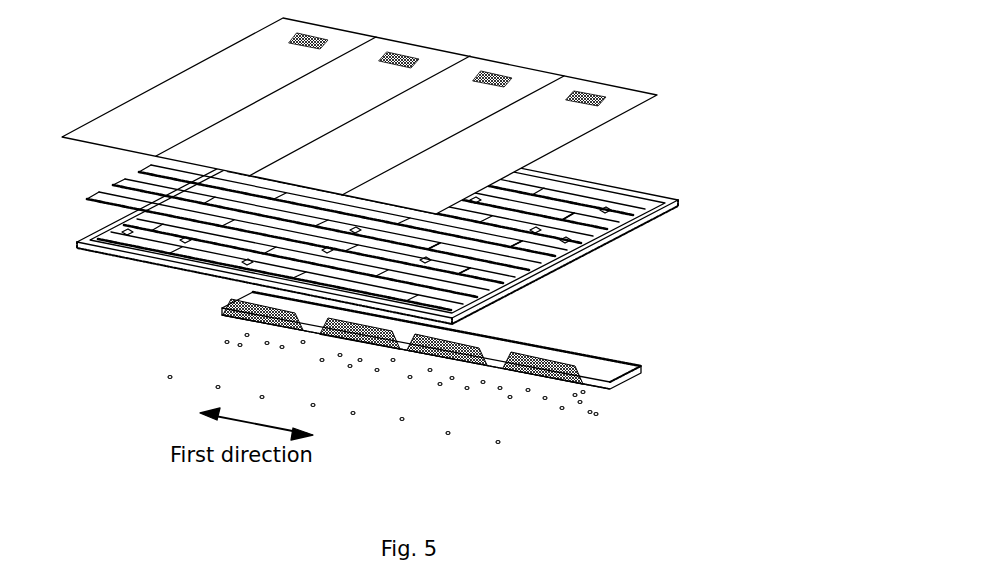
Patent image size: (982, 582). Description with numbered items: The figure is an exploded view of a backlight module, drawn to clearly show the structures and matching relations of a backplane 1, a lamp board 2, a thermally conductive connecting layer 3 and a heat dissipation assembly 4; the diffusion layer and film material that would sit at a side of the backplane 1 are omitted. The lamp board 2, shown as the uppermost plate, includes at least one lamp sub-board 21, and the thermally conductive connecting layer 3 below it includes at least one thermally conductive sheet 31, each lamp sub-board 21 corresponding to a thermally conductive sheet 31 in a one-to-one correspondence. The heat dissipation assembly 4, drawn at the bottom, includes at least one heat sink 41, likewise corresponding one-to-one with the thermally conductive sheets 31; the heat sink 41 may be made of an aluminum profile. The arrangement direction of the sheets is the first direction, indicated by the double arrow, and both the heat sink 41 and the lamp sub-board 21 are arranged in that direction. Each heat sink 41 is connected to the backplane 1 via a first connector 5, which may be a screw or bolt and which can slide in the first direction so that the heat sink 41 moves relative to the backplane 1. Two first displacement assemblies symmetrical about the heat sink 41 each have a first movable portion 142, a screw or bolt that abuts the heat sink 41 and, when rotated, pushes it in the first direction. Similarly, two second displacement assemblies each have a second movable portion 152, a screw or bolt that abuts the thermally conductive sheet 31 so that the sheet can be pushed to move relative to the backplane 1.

The backplane 1 is at (419, 232).
The lamp board 2 is at (412, 112).
The lamp sub-board 21 is at (542, 103).
The thermally conductive connecting layer 3 is at (545, 225).
The thermally conductive sheet 31 is at (483, 238).
The heat dissipation assembly 4 is at (466, 389).
The heat sink 41 is at (523, 373).
The first movable portion 142 is at (583, 395).
The first connector 5 is at (437, 418).
The second movable portion 152 is at (402, 421).